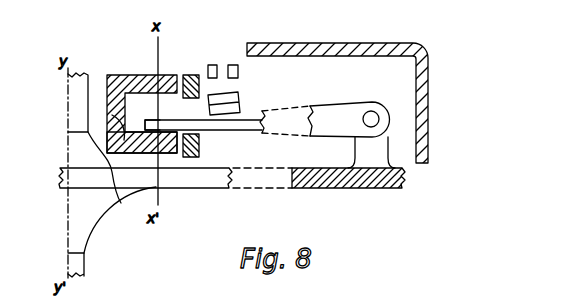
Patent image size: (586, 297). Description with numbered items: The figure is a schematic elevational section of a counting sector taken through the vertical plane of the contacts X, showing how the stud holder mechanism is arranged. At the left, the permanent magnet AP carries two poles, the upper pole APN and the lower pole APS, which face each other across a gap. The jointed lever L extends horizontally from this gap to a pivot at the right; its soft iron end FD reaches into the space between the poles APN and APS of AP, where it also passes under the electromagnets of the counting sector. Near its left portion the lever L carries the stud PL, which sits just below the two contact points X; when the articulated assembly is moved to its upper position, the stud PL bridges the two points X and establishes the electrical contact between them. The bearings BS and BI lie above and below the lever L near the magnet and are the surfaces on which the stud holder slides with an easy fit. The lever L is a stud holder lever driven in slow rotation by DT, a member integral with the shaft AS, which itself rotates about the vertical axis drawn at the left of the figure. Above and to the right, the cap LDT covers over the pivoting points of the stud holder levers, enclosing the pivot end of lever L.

The pole APN is at (138, 77).
The permanent magnet AP is at (100, 149).
The shaft AS is at (80, 226).
The pole APS is at (168, 156).
The soft iron end FD is at (141, 125).
The bearing BS is at (193, 77).
The bearing BI is at (199, 147).
The contacts X is at (236, 59).
The stud PL is at (240, 97).
The jointed lever L is at (347, 105).
The cap LDT is at (428, 114).
The drive member DT is at (333, 189).